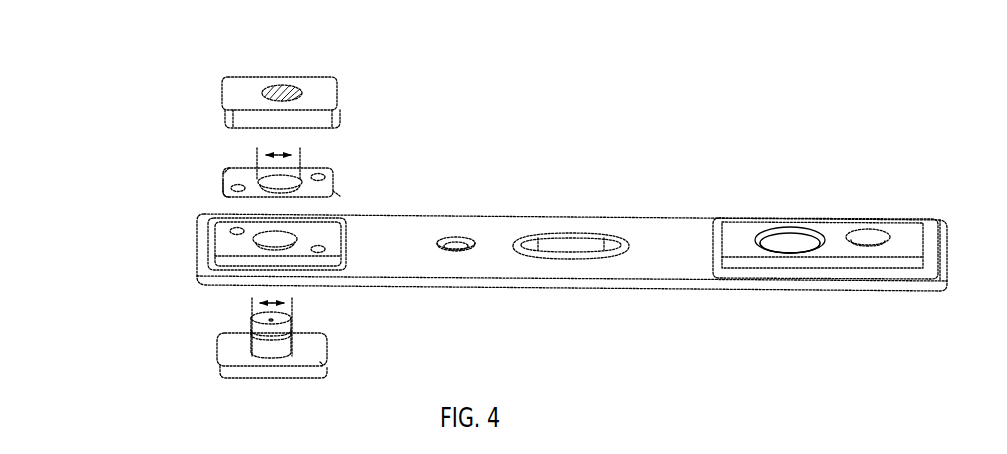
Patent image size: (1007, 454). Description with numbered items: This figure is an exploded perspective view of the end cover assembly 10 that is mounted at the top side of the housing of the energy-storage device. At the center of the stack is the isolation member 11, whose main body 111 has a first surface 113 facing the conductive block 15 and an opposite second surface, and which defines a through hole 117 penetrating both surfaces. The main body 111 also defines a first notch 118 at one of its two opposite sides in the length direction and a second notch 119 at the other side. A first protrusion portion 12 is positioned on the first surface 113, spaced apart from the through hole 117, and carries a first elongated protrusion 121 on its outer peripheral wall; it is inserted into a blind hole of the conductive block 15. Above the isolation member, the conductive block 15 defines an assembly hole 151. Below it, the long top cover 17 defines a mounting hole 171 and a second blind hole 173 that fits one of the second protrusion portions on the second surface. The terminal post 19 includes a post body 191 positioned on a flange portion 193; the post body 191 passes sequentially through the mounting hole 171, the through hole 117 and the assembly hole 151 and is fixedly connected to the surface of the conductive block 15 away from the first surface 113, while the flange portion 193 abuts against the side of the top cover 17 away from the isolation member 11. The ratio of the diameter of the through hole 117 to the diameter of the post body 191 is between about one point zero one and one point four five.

The end cover assembly 10 is at (603, 132).
The isolation member 11 is at (321, 176).
The main body 111 is at (240, 188).
The first surface 113 is at (332, 167).
The through hole 117 is at (297, 186).
The first notch 118 is at (337, 184).
The second notch 119 is at (219, 184).
The first protrusion portion 12 is at (226, 172).
The first elongated protrusion 121 is at (224, 190).
The conductive block 15 is at (332, 80).
The assembly hole 151 is at (292, 92).
The top cover 17 is at (187, 280).
The mounting hole 171 is at (268, 245).
The second blind hole 173 is at (229, 232).
The terminal post 19 is at (359, 343).
The post body 191 is at (292, 337).
The flange portion 193 is at (327, 362).